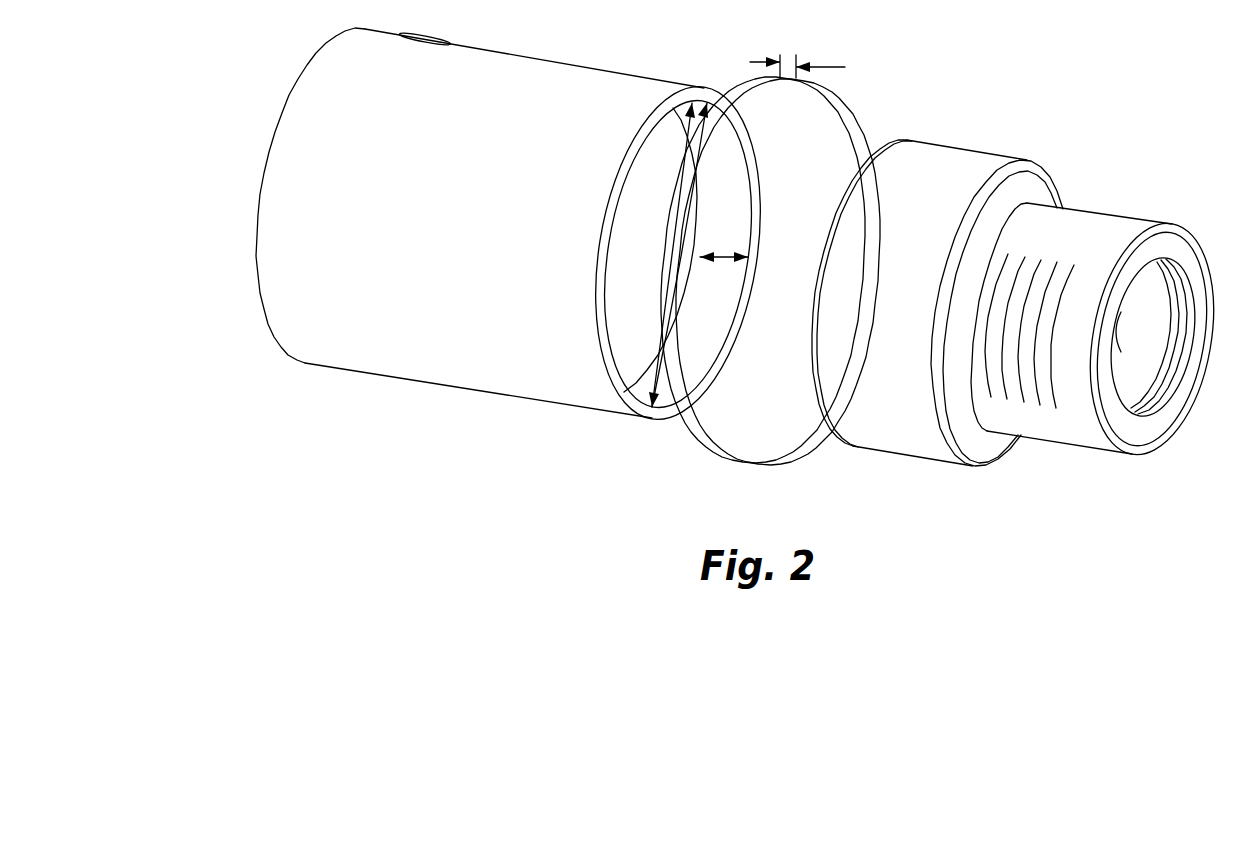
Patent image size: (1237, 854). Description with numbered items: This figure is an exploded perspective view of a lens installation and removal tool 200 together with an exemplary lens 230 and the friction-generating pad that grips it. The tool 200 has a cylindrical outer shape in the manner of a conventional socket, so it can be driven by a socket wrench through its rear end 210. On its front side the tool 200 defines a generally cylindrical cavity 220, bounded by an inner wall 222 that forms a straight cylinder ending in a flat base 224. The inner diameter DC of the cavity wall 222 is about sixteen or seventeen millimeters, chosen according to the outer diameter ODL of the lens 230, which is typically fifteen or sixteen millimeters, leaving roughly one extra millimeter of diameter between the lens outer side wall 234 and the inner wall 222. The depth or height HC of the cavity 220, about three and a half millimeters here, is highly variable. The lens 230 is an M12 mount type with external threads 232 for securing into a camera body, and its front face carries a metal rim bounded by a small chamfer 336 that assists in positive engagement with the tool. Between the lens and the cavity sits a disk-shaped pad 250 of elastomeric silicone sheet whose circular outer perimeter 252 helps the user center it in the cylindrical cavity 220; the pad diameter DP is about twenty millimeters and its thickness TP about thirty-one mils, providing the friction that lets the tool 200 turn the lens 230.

The lens installation and removal tool 200 is at (368, 393).
The rear end 210 is at (243, 249).
The cavity 220 is at (624, 353).
The inner wall 222 is at (680, 170).
The flat base 224 is at (604, 268).
The lens 230 is at (898, 503).
The threaded portion 232 is at (1057, 268).
The lens outer side wall 234 is at (935, 448).
The disk-shaped pad 250 is at (877, 80).
The circular outer perimeter 252 is at (678, 443).
The chamfer 336 is at (817, 292).
The inner diameter of the cavity wall DC is at (680, 133).
The depth or height of the cavity HC is at (725, 260).
The thickness of the pad material TP is at (819, 66).
The diameter of the pad DP is at (690, 483).
The outer diameter of the lens ODL is at (994, 137).